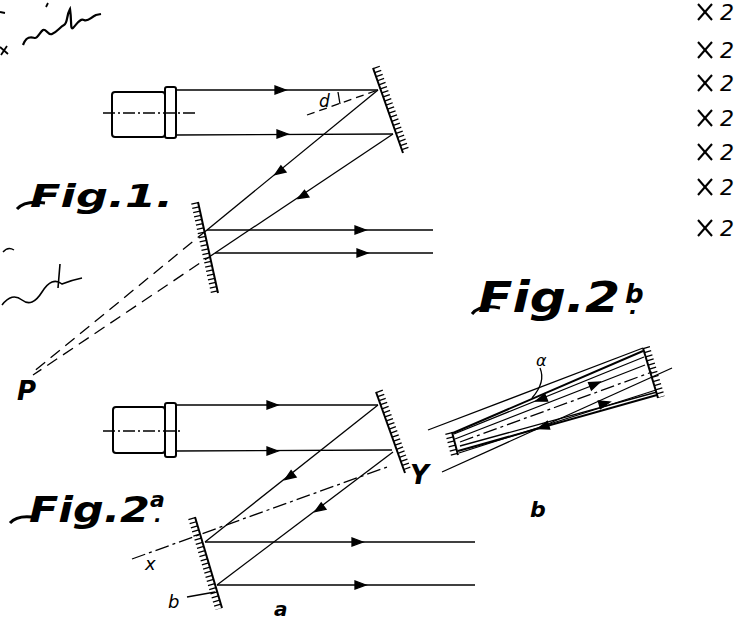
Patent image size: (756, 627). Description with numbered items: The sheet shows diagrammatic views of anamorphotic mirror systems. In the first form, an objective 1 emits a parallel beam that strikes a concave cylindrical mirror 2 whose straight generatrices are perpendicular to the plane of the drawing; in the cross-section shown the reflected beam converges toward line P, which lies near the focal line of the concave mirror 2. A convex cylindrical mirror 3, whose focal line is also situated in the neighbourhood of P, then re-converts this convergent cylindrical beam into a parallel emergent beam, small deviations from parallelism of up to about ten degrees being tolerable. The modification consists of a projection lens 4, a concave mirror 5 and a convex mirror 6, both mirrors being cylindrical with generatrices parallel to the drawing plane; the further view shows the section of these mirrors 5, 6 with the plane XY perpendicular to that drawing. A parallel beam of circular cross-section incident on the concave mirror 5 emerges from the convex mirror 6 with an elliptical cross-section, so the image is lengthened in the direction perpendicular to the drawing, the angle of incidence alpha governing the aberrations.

In FIG. 1, the objective 1 is at (142, 100).
In FIG. 1, the concave cylindrical mirror 2 is at (402, 123).
In FIG. 1, the convex cylindrical mirror 3 is at (200, 223).
In FIG. 2A, the projection lens 4 is at (147, 418).
In FIG. 2A, the concave mirror 5 is at (399, 404).
In FIG. 2B, the concave mirror 5 is at (659, 358).
In FIG. 2A, the convex mirror 6 is at (212, 563).
In FIG. 2B, the convex mirror 6 is at (460, 447).